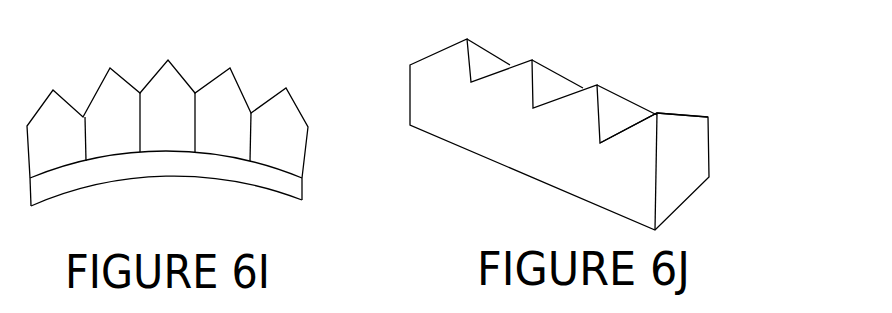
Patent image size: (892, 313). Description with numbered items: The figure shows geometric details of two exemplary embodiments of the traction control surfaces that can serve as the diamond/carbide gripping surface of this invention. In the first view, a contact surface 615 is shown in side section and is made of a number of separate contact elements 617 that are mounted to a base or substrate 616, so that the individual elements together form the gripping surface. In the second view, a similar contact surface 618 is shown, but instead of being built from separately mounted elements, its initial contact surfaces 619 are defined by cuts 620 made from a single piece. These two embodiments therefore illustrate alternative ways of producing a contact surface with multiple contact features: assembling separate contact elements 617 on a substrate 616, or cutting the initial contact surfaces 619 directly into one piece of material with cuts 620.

In FIG. 6I, the contact surface 615 is at (310, 157).
In FIG. 6I, the base or substrate 616 is at (308, 188).
In FIG. 6I, the separate contact elements 617 is at (298, 100).
In FIG. 6J, the contact surface 618 is at (717, 148).
In FIG. 6J, the initial contact surfaces 619 is at (658, 112).
In FIG. 6J, the cuts 620 is at (613, 107).